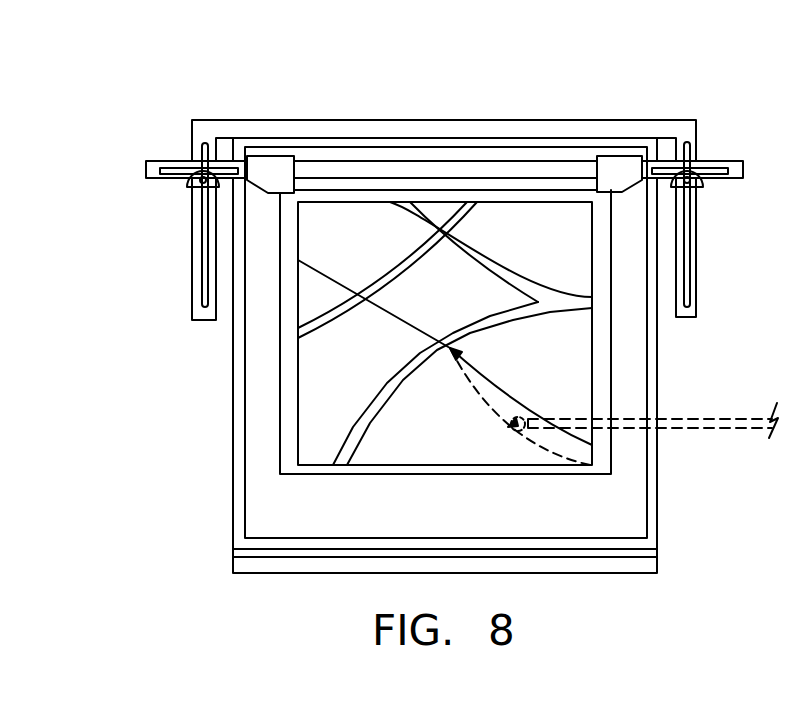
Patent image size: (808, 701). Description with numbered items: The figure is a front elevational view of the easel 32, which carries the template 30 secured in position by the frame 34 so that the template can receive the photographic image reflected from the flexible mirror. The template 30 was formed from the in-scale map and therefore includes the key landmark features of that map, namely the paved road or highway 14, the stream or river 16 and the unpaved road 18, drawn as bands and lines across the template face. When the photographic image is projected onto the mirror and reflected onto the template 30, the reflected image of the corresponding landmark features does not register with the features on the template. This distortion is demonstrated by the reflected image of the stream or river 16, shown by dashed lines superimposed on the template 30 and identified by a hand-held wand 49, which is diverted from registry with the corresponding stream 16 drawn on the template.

The paved road or highway 14 is at (510, 320).
The stream or river 16 is at (330, 275).
The unpaved road 18 is at (408, 272).
The template 30 is at (320, 373).
The easel 32 is at (175, 113).
The frame 34 is at (425, 122).
The hand-held wand 49 is at (692, 413).